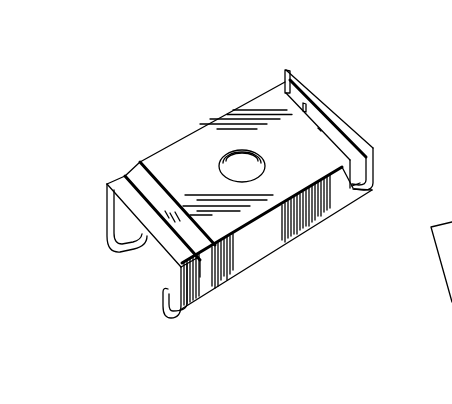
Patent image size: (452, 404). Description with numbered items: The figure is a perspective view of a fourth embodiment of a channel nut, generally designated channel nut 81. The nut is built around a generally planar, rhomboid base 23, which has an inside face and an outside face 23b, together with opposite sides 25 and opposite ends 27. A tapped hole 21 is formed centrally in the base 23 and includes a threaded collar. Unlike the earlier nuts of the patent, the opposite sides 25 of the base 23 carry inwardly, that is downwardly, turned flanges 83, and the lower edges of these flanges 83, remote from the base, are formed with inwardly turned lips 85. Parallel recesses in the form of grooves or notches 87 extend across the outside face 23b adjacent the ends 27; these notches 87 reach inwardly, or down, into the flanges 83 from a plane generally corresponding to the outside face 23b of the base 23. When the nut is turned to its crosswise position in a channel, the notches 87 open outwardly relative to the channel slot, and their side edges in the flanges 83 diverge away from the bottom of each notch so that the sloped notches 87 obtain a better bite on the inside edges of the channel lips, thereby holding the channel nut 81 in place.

The tapped hole 21 is at (230, 148).
The base 23 is at (261, 97).
The outside face 23b is at (297, 171).
The opposite sides 25 is at (182, 137).
The opposite ends 27 is at (138, 204).
The channel nut 81 is at (354, 90).
The flanges 83 is at (353, 196).
The inwardly turned lips 85 is at (118, 257).
The notches 87 is at (132, 175).